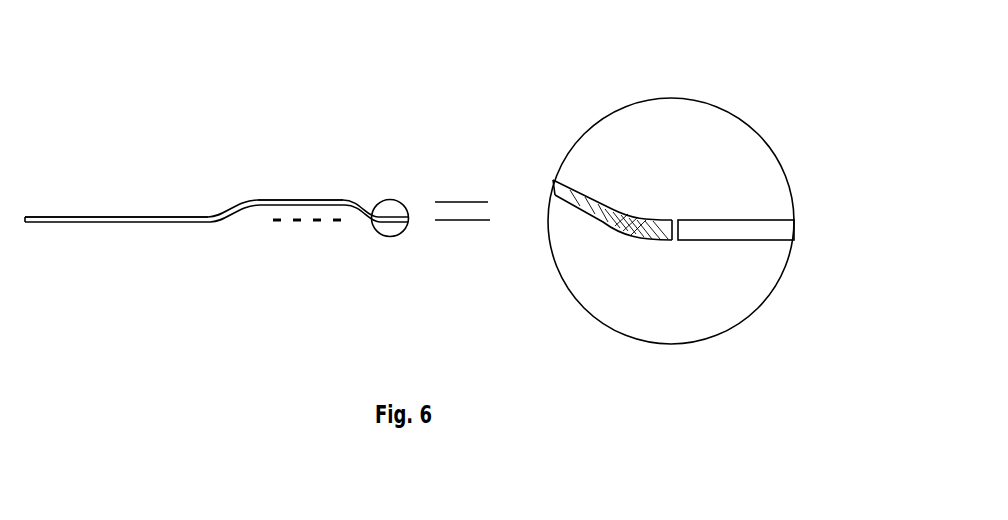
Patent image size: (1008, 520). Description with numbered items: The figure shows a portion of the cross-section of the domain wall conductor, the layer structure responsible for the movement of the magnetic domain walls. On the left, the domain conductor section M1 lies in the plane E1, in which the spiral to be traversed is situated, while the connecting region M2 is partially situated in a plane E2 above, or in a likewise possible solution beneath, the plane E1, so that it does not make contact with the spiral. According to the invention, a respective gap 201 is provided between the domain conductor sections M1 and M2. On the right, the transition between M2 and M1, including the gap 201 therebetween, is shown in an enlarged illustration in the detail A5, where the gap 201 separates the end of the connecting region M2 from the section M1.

The gap 201 is at (210, 217).
The domain conductor section M1 is at (130, 222).
The connecting region M2 is at (277, 200).
The detail A5 is at (389, 245).
The plane E1 is at (477, 220).
The plane E2 is at (476, 202).